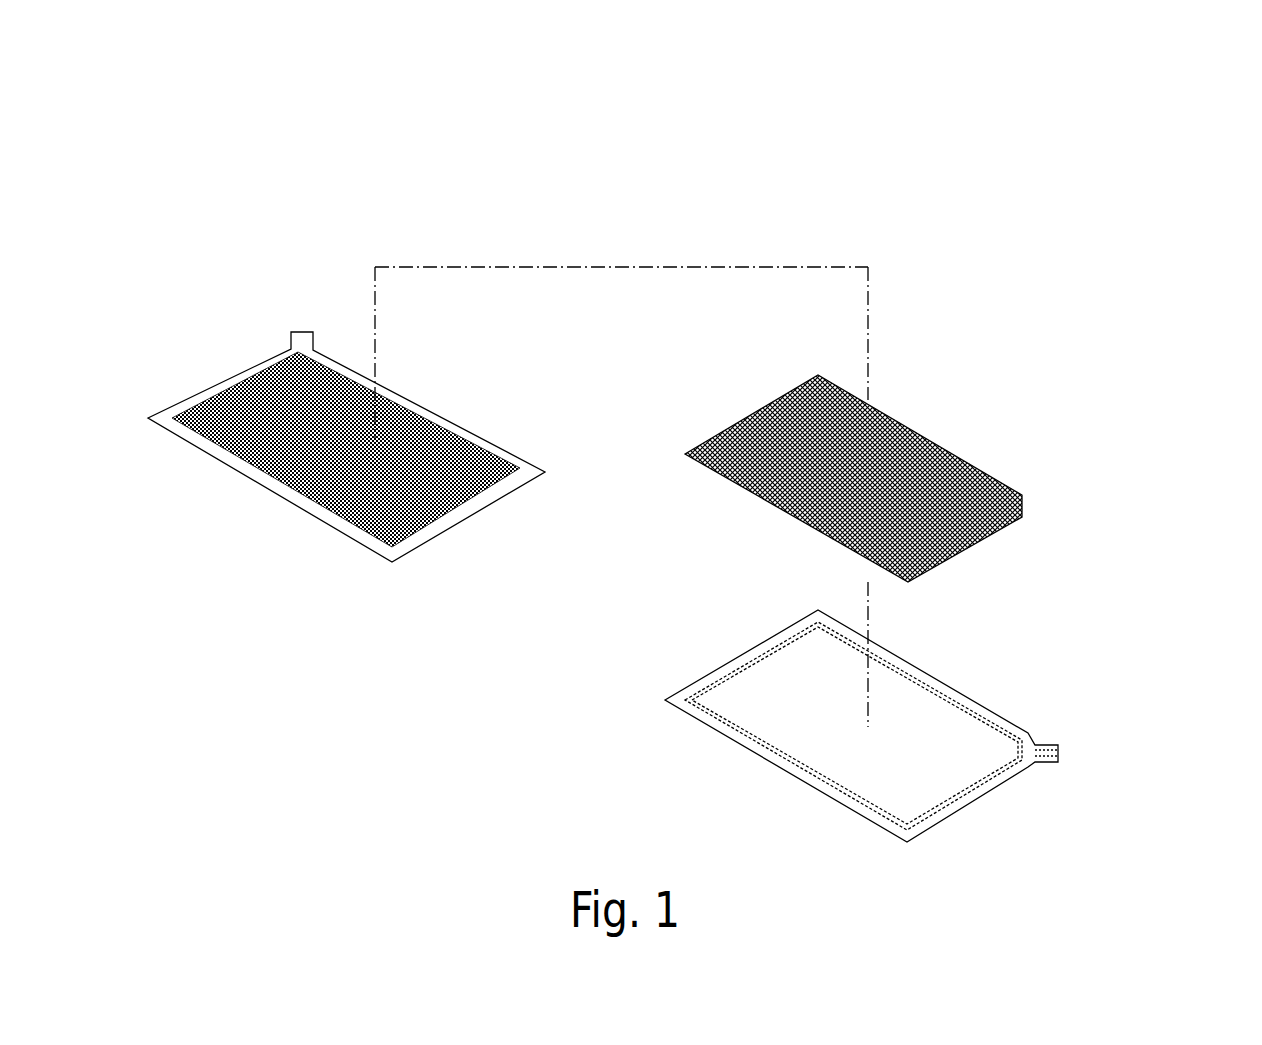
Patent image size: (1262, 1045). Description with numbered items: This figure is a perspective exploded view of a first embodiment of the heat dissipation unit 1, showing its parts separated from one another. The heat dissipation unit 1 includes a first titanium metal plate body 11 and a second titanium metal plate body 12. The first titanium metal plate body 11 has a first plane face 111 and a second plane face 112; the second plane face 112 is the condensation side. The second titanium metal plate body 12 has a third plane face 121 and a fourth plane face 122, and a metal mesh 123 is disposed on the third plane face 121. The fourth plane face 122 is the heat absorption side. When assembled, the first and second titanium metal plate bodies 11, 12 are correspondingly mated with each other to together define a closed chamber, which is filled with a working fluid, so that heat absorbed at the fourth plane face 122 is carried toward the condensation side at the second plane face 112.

The heat dissipation unit 1 is at (1133, 143).
The first titanium metal plate body 11 is at (324, 487).
The first plane face 111 is at (330, 514).
The second plane face 112 is at (266, 488).
The second titanium metal plate body 12 is at (648, 726).
The third plane face 121 is at (718, 701).
The fourth plane face 122 is at (685, 715).
The metal mesh 123 is at (727, 480).